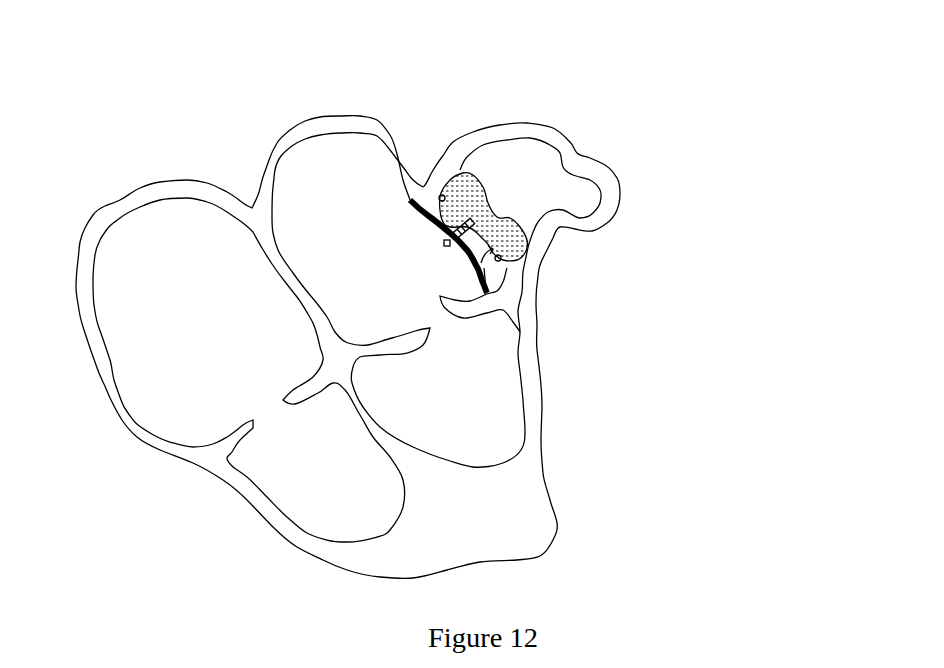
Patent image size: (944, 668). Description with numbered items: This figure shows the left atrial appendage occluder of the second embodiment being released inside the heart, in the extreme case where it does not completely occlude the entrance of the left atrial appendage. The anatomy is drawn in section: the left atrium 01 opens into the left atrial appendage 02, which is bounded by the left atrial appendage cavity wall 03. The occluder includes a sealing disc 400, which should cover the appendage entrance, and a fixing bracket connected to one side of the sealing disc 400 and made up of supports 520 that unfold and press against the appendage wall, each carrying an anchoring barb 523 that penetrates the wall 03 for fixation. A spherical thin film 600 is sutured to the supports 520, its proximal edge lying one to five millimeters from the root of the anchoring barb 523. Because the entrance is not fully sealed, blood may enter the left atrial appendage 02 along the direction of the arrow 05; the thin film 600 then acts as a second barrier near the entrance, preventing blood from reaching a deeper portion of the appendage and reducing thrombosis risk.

The left atrium 01 is at (345, 182).
The left atrial appendage 02 is at (543, 162).
The left atrial appendage cavity wall 03 is at (612, 197).
The arrow 05 is at (505, 305).
The sealing disc 400 is at (415, 200).
The support 520 is at (527, 238).
The anchoring barb 523 is at (442, 182).
The thin film 600 is at (518, 250).